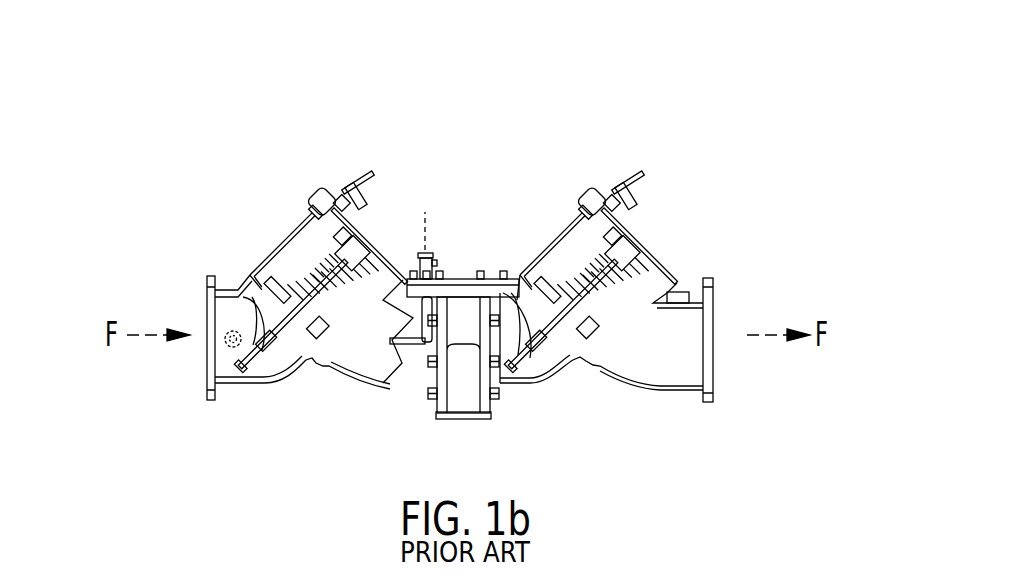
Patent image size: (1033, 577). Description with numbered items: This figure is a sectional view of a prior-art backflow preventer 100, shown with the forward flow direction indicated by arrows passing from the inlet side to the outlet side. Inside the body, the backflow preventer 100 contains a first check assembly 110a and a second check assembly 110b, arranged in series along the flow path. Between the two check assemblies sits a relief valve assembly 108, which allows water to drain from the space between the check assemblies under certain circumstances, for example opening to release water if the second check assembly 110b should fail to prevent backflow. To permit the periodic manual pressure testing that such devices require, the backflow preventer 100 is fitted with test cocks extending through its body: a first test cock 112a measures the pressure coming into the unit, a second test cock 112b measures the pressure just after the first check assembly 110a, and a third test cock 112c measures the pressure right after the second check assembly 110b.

The backflow preventer 100 is at (736, 114).
The relief valve assembly 108 is at (434, 400).
The first check assembly 110a is at (290, 260).
The second check assembly 110b is at (658, 258).
The first test cock 112a is at (226, 345).
The second test cock 112b is at (360, 200).
The third test cock 112c is at (632, 198).